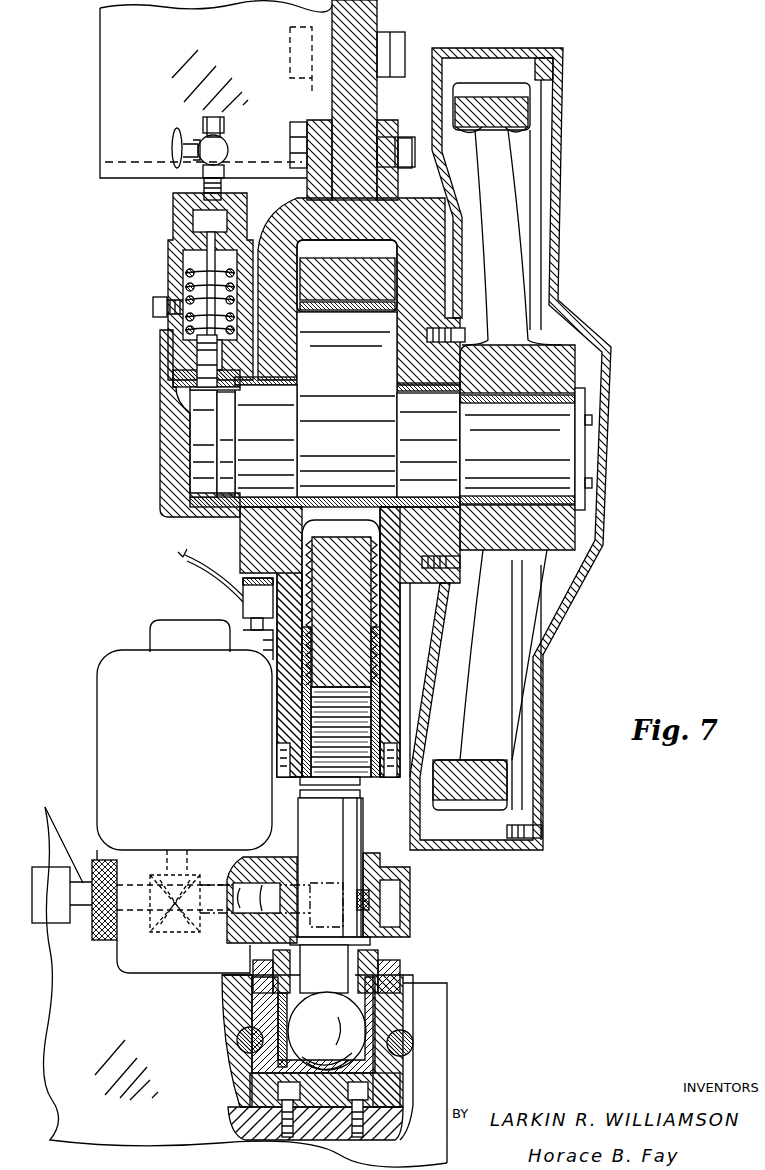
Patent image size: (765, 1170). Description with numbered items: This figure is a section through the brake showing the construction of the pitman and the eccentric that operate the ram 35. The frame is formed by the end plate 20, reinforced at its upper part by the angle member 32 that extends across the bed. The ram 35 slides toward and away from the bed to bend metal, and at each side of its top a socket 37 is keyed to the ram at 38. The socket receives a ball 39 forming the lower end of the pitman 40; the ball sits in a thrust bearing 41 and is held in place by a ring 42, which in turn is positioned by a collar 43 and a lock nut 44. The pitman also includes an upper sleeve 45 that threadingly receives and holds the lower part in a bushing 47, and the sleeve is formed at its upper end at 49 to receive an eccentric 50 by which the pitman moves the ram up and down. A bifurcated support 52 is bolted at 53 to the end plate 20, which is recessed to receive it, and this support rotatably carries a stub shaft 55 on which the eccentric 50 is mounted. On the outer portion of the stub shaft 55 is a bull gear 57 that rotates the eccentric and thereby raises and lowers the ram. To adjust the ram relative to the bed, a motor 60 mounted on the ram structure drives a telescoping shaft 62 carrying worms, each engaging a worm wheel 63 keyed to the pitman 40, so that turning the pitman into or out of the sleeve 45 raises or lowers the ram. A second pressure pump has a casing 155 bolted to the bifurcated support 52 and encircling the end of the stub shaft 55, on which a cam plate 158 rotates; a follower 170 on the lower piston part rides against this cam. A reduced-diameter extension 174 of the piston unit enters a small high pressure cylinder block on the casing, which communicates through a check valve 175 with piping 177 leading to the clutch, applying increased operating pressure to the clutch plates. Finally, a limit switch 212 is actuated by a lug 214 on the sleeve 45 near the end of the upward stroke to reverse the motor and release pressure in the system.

The end plate 20 is at (385, 30).
The angle member 32 is at (216, 89).
The ram 35 is at (245, 987).
The socket 37 is at (393, 1020).
The key 38 is at (413, 1045).
The ball 39 is at (327, 1031).
The pitman 40 is at (285, 885).
The thrust bearing 41 is at (278, 1070).
The ring 42 is at (278, 1000).
The collar 43 is at (383, 953).
The lock nut 44 is at (392, 968).
The upper sleeve 45 is at (288, 678).
The bushing 47 is at (292, 780).
The upper end of sleeve 49 is at (378, 292).
The eccentric 50 is at (347, 404).
The bifurcated support 52 is at (386, 128).
The bolt 53 is at (298, 133).
The stub shaft 55 is at (266, 441).
The bull gear 57 is at (518, 313).
The motor 60 is at (184, 796).
The telescoping shaft 62 is at (57, 925).
The worm wheel 63 is at (390, 903).
The casing 155 is at (177, 397).
The cam plate 158 is at (202, 428).
The follower 170 is at (207, 370).
The extension 174 is at (183, 248).
The check valve 175 is at (173, 143).
The piping 177 is at (229, 120).
The limit switch 212 is at (243, 600).
The lug 214 is at (272, 632).